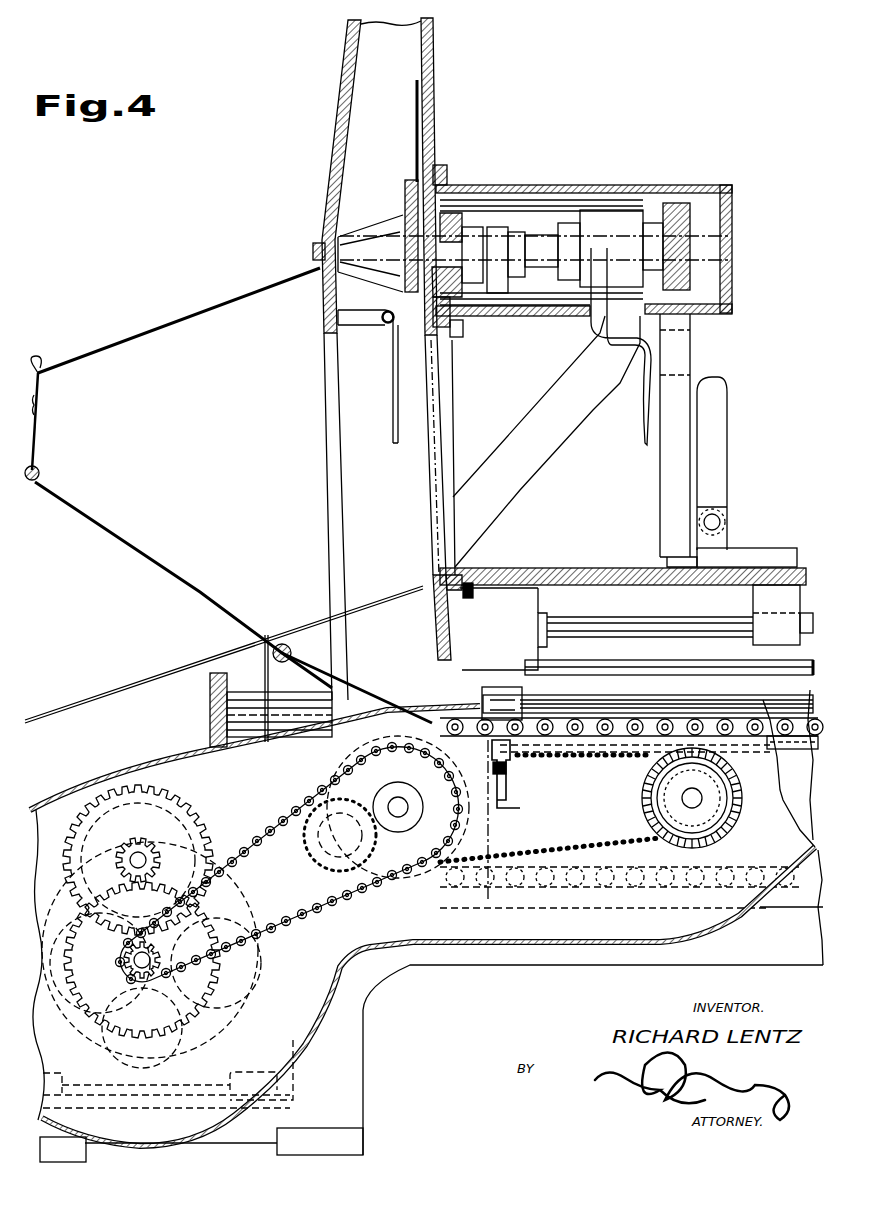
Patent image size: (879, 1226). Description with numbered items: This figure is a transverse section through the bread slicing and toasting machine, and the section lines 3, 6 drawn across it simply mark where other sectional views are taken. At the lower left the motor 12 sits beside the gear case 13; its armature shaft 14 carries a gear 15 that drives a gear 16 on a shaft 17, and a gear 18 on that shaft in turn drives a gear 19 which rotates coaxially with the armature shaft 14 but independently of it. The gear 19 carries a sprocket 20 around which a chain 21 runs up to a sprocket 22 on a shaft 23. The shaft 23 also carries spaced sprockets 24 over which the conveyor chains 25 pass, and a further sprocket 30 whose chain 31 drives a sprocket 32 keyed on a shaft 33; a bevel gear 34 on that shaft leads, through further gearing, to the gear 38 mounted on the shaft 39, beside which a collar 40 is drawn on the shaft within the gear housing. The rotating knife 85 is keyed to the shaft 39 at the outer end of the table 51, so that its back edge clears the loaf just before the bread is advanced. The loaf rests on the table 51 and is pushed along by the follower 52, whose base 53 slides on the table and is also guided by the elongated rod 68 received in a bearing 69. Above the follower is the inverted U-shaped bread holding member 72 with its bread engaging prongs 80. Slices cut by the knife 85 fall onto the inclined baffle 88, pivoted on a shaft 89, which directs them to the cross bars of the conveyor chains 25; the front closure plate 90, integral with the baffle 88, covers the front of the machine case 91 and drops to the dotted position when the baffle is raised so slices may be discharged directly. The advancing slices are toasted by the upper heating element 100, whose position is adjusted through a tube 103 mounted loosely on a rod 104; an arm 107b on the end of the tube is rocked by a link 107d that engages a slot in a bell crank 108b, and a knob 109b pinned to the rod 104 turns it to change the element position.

The section line 3 is at (350, 46).
The section line 6 is at (488, 1112).
The motor 12 is at (282, 972).
The gear case 13 is at (118, 770).
The armature shaft 14 is at (128, 970).
The gear 15 is at (118, 953).
The gear 16 is at (193, 826).
The shaft 17 is at (142, 852).
The gear 18 is at (132, 854).
The gear 19 is at (212, 910).
The sprocket 20 is at (150, 958).
The chain 21 is at (335, 896).
The sprocket 22 is at (350, 836).
The shaft 23 is at (390, 805).
The spaced sprockets 24 is at (484, 820).
The chains 25 is at (785, 698).
The sprocket 30 is at (320, 840).
The chain 31 is at (578, 850).
The sprocket 32 is at (655, 806).
The shaft 33 is at (698, 796).
The bevel gear 34 is at (728, 820).
The gear 38 is at (688, 214).
The shaft 39 is at (538, 240).
The collar 40 is at (496, 226).
The table 51 is at (594, 578).
The follower 52 is at (707, 450).
The base 53 is at (768, 553).
The elongated rod 68 is at (702, 618).
The bearing 69 is at (753, 595).
The inverted U-shaped bread holding member 72 is at (668, 465).
The bread engaging prongs 80 is at (646, 404).
The rotating knife 85 is at (416, 99).
The inclined baffle 88 is at (400, 590).
The shaft 89 is at (288, 645).
The front closure plate 90 is at (140, 547).
The machine case 91 is at (188, 318).
The upper heating element 100 is at (662, 652).
The tube 103 is at (696, 698).
The rod 104 is at (812, 652).
The arm 107b is at (522, 700).
The link 107d is at (508, 805).
The bell crank 108b is at (508, 770).
The knob 109b is at (209, 690).